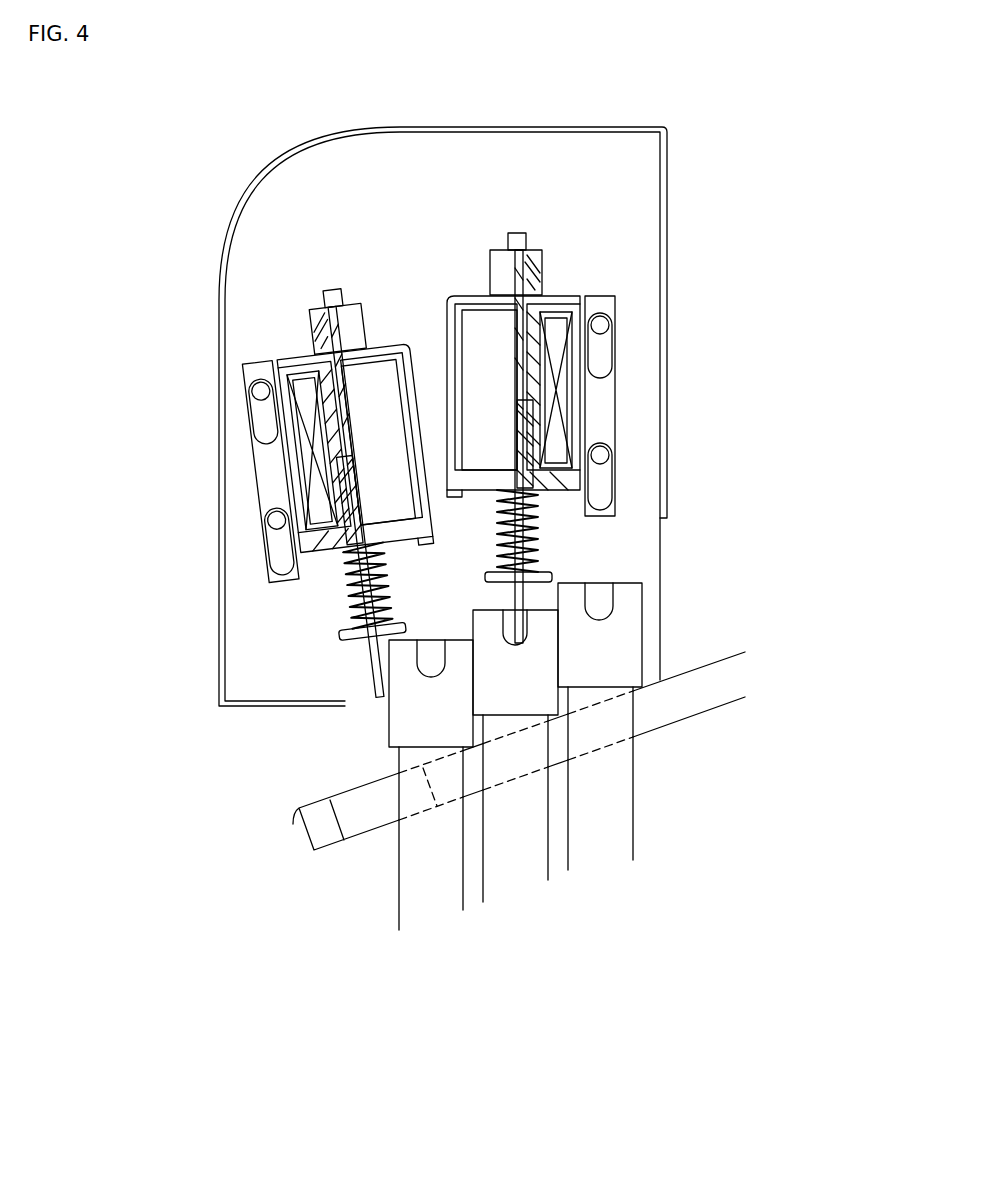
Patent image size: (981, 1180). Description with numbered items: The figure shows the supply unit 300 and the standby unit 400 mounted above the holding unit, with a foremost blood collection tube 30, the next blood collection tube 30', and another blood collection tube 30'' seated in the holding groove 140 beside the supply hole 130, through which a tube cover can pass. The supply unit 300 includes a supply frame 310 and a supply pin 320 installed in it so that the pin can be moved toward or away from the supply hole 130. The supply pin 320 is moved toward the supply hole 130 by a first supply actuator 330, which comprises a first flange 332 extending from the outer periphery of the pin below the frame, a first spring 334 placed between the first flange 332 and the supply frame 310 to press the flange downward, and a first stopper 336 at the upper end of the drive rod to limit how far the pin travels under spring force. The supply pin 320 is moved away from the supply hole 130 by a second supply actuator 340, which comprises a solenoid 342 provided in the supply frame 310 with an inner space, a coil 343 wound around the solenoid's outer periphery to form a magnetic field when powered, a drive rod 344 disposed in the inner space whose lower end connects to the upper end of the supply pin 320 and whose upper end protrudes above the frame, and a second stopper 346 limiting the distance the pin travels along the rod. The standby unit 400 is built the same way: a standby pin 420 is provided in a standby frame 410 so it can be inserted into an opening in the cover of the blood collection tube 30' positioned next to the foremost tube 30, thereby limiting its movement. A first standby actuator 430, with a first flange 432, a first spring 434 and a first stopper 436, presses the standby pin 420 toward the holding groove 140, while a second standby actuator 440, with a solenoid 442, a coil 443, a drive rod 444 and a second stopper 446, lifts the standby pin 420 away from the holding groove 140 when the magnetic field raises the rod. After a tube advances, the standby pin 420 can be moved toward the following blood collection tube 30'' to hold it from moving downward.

The supply unit 300 is at (246, 233).
The supply frame 310 is at (285, 360).
The supply pin 320 is at (387, 690).
The first supply actuator 330 is at (255, 602).
The first flange 332 is at (343, 633).
The first spring 334 is at (350, 583).
The first stopper 336 is at (306, 327).
The second supply actuator 340 is at (246, 476).
The solenoid 342 is at (305, 463).
The coil 343 is at (297, 478).
The drive rod 344 is at (308, 437).
The second stopper 346 is at (312, 395).
The standby unit 400 is at (622, 403).
The standby frame 410 is at (553, 297).
The standby pin 420 is at (522, 623).
The first standby actuator 430 is at (641, 540).
The first flange 432 is at (550, 578).
The first spring 434 is at (540, 512).
The first stopper 436 is at (492, 262).
The second standby actuator 440 is at (634, 406).
The solenoid 442 is at (565, 432).
The coil 443 is at (562, 402).
The drive rod 444 is at (521, 372).
The second stopper 446 is at (530, 343).
The supply hole 130 is at (358, 805).
The holding groove 140 is at (668, 710).
The blood collection tube 30 is at (414, 891).
The blood collection tube 30' is at (522, 867).
The blood collection tube 30'' is at (644, 835).